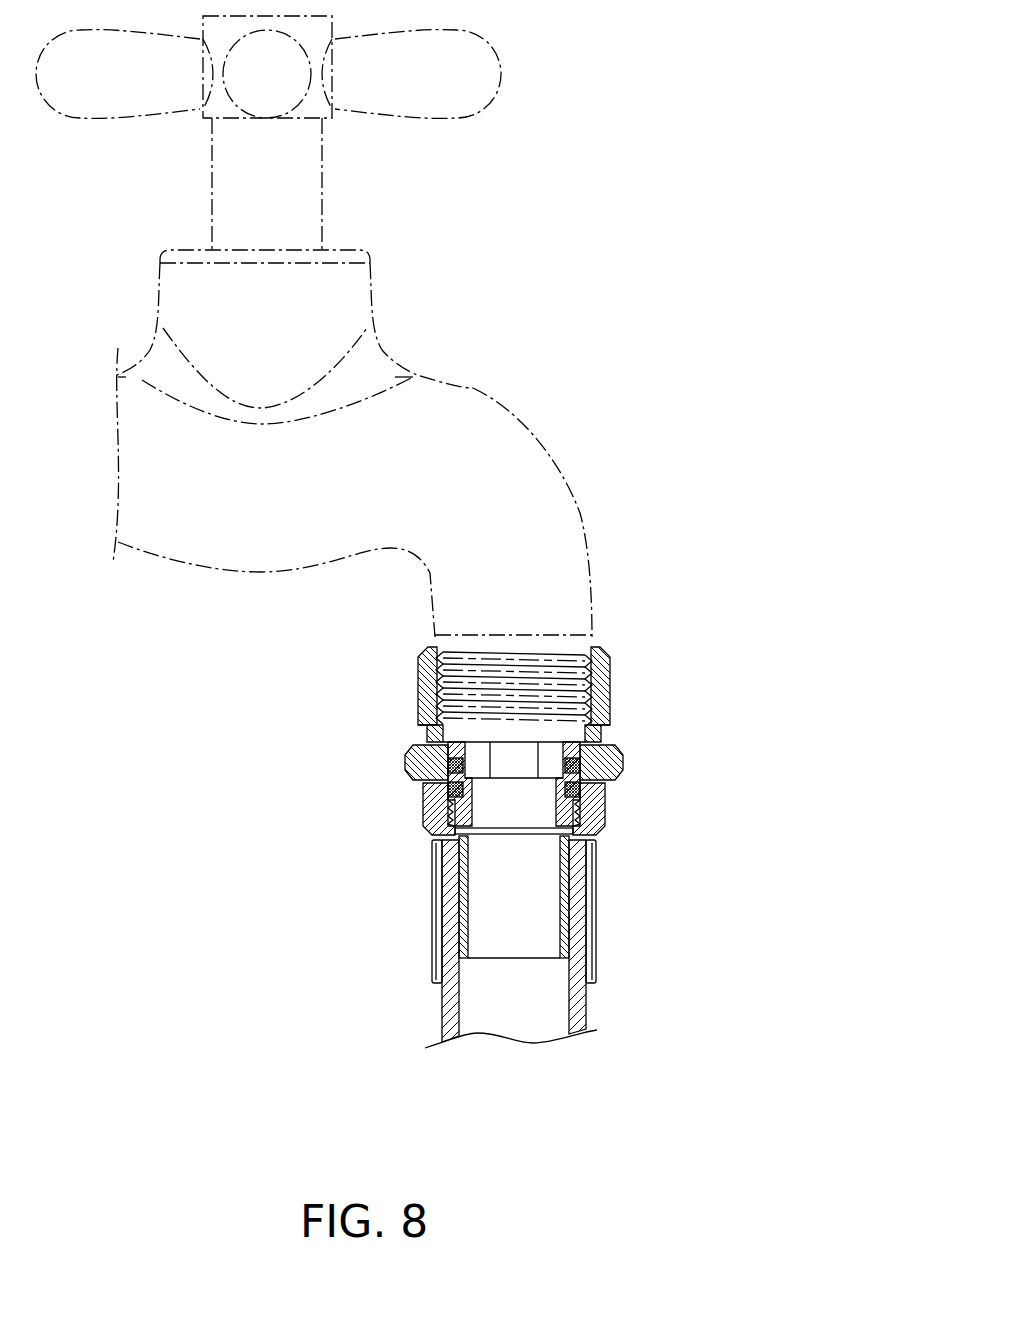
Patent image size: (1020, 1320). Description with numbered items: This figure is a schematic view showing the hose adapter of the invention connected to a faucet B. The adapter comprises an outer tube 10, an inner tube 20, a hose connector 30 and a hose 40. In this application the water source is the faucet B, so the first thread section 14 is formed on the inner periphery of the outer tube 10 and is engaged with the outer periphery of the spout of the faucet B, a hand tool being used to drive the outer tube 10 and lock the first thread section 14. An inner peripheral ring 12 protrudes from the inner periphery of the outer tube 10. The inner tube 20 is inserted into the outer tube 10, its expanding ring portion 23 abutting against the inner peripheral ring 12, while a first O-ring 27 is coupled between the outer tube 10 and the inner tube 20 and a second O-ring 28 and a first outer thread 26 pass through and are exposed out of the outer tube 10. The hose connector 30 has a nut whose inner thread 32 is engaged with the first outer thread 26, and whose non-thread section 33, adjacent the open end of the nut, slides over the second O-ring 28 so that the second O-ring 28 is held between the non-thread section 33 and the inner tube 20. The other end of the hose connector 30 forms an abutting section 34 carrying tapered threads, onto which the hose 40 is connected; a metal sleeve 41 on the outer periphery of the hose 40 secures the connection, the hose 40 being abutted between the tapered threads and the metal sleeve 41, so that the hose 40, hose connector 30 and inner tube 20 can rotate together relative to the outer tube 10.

The faucet B is at (473, 388).
The outer tube 10 is at (447, 628).
The inner peripheral ring 12 is at (519, 748).
The first thread section 14 is at (573, 648).
The inner tube 20 is at (503, 737).
The expanding ring portion 23 is at (427, 733).
The first outer thread 26 is at (600, 815).
The first O-ring 27 is at (410, 763).
The second O-ring 28 is at (422, 787).
The hose connector 30 is at (497, 848).
The inner thread 32 is at (641, 835).
The non-thread section 33 is at (602, 808).
The abutting section 34 is at (568, 887).
The hose 40 is at (596, 1007).
The metal sleeve 41 is at (590, 935).